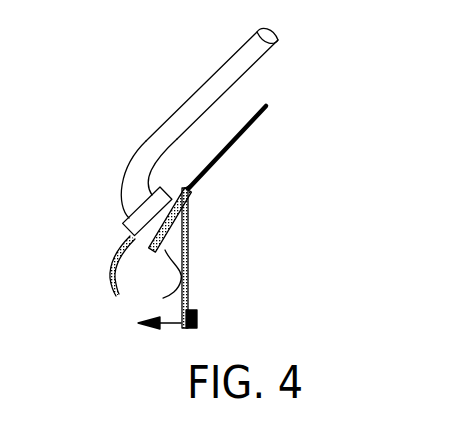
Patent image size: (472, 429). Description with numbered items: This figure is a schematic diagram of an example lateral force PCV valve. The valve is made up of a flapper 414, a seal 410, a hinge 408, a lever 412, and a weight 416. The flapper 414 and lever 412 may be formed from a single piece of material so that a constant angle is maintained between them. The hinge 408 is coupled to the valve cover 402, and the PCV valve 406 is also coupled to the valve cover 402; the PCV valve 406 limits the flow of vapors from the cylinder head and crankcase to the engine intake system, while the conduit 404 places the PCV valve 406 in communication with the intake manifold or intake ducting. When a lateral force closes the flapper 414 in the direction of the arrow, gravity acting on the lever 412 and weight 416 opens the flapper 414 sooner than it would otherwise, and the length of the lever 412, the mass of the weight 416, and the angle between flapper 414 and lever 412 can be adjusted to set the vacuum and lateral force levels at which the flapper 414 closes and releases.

The valve cover 402 is at (246, 130).
The conduit 404 is at (169, 118).
The PCV valve 406 is at (121, 223).
The hinge 408 is at (194, 184).
The seal 410 is at (159, 250).
The lever 412 is at (188, 267).
The flapper 414 is at (153, 281).
The weight 416 is at (199, 323).